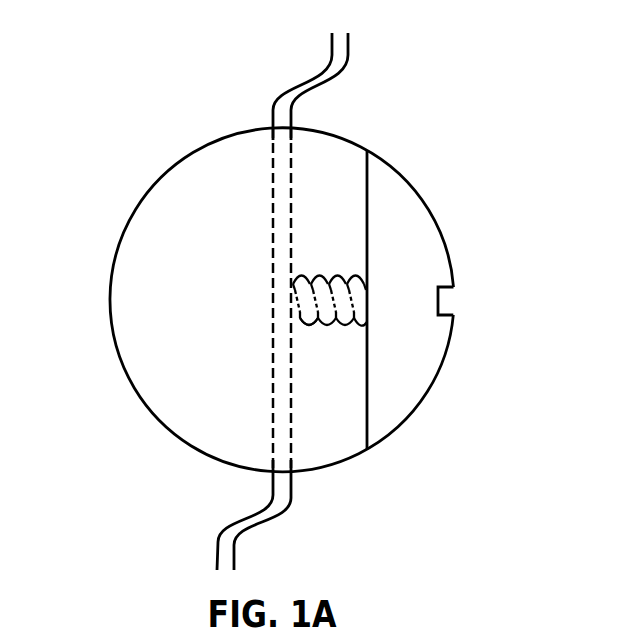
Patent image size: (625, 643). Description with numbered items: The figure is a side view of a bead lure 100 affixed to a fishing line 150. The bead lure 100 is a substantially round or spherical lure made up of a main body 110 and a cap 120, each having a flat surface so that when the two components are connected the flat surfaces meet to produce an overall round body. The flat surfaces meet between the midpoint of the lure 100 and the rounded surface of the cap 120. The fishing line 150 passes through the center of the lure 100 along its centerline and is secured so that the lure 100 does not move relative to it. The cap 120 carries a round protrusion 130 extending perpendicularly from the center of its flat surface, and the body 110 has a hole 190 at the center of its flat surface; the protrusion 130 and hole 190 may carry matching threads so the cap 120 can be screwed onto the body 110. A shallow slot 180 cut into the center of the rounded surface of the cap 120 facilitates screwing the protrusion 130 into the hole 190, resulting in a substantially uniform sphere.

The bead lure 100 is at (146, 37).
The main body 110 is at (122, 265).
The cap 120 is at (413, 223).
The round protrusion 130 is at (341, 276).
The fishing line 150 is at (350, 56).
The slot 180 is at (448, 302).
The hole 190 is at (309, 324).